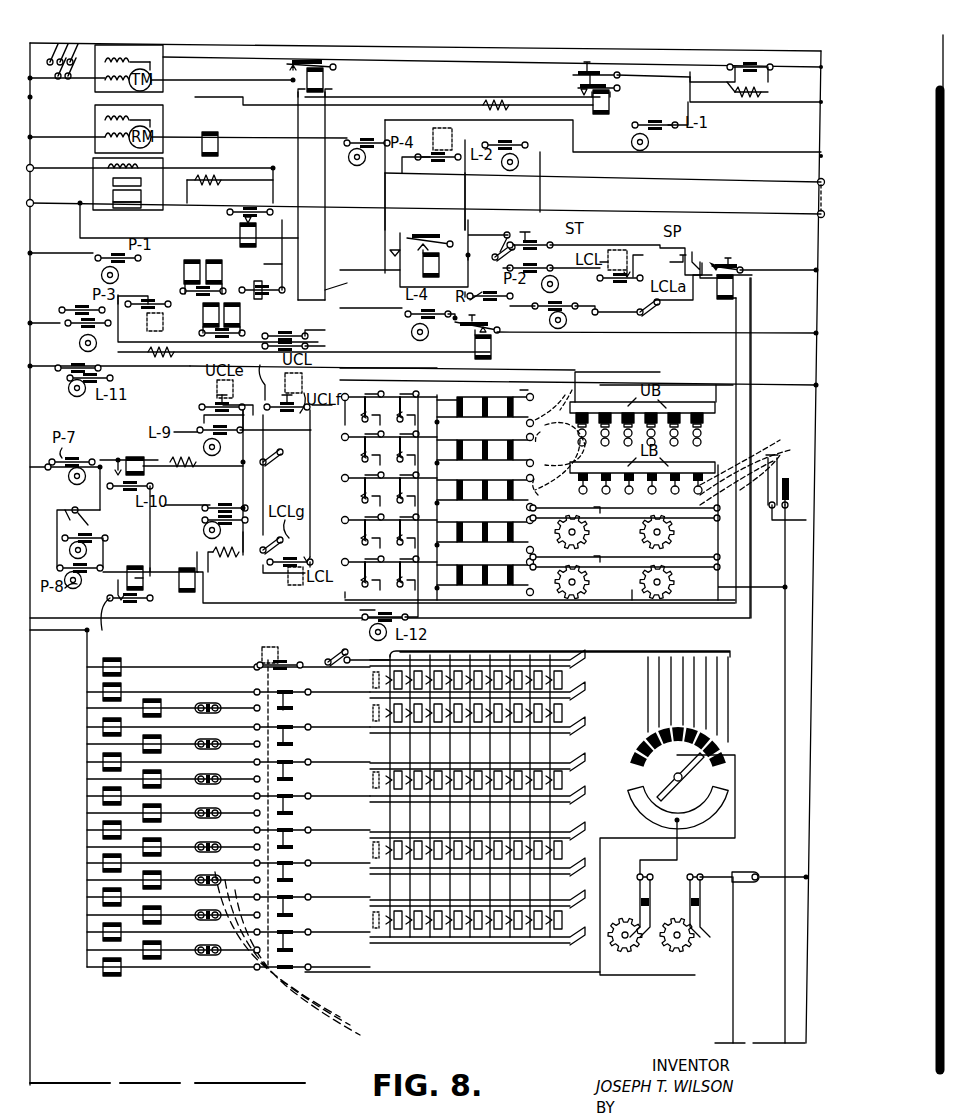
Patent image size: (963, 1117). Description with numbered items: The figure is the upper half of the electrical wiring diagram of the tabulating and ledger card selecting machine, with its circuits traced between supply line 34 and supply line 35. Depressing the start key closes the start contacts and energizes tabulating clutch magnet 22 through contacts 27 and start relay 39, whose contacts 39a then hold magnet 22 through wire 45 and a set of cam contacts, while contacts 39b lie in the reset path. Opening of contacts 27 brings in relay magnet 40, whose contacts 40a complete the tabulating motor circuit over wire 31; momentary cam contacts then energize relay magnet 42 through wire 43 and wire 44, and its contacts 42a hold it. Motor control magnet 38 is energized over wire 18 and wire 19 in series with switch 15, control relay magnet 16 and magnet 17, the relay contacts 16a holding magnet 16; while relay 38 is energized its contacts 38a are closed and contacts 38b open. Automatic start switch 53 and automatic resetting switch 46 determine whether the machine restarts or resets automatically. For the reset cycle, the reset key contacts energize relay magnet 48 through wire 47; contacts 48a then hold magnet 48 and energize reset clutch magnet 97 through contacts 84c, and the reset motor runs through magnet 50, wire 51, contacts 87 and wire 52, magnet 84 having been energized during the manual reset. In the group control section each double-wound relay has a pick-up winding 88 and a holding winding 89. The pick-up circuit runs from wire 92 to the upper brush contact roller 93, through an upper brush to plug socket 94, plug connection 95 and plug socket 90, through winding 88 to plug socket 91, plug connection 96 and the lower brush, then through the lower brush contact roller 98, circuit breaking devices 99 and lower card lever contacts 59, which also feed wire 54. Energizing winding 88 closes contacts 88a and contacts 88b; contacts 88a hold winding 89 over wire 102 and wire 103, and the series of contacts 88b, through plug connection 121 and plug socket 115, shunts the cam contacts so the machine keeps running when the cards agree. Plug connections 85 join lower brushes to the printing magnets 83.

The wire 31 is at (515, 50).
The line 34 is at (52, 230).
The line 35 is at (816, 262).
The relay magnet 40 is at (323, 80).
The contacts 40a is at (274, 57).
The relay magnet 42 is at (610, 100).
The contacts 42a is at (578, 90).
The wire 43 is at (195, 97).
The wire 44 is at (421, 90).
The wire 45 is at (465, 190).
The magnet 50 is at (218, 146).
The wire 51 is at (395, 190).
The wire 52 is at (385, 122).
The tabulating clutch magnet 22 is at (222, 272).
The contacts 27 is at (272, 284).
The magnet 84 is at (163, 320).
The contacts 84c is at (149, 292).
The reset clutch magnet 97 is at (240, 315).
The contacts 87 is at (300, 318).
The wire 92 is at (190, 366).
The wire 103 is at (640, 372).
The start relay 39 is at (431, 263).
The contacts 39a is at (395, 250).
The contacts 39b is at (432, 220).
The automatic start switch 53 is at (492, 246).
The motor control magnet 38 is at (722, 295).
The contacts 38a is at (705, 254).
The contacts 38b is at (735, 258).
The automatic resetting switch 46 is at (635, 314).
The wire 47 is at (512, 302).
The relay magnet 48 is at (491, 345).
The contacts 48a is at (468, 332).
The wire 19 is at (210, 553).
The wire 18 is at (228, 604).
The switch 15 is at (90, 525).
The control relay magnet 16 is at (128, 566).
The relay contacts 16a is at (112, 625).
The magnet 17 is at (189, 568).
The wire 102 is at (207, 620).
The plug socket 115 is at (279, 482).
The plug connection 121 is at (314, 475).
The pick-up winding 88 is at (500, 407).
The contacts 88a is at (418, 418).
The contacts 88b is at (370, 405).
The holding winding 89 is at (472, 405).
The plug socket 90 is at (535, 420).
The plug socket 91 is at (539, 424).
The upper brush contact roller 93 is at (615, 406).
The plug socket 94 is at (560, 457).
The plug connection 95 is at (551, 394).
The plug connection 96 is at (552, 450).
The lower brush contact roller 98 is at (695, 465).
The circuit breaking devices 99 is at (592, 535).
The plug connections 85 is at (747, 460).
The lower card lever contacts 59 is at (783, 478).
The wire 54 is at (785, 622).
The printing magnet 83 is at (125, 676).